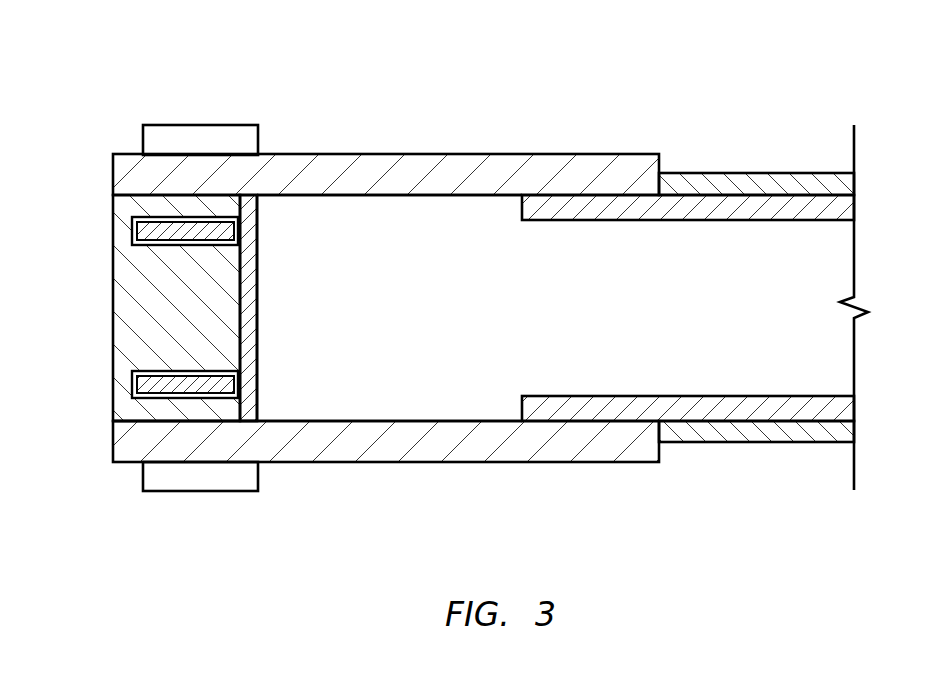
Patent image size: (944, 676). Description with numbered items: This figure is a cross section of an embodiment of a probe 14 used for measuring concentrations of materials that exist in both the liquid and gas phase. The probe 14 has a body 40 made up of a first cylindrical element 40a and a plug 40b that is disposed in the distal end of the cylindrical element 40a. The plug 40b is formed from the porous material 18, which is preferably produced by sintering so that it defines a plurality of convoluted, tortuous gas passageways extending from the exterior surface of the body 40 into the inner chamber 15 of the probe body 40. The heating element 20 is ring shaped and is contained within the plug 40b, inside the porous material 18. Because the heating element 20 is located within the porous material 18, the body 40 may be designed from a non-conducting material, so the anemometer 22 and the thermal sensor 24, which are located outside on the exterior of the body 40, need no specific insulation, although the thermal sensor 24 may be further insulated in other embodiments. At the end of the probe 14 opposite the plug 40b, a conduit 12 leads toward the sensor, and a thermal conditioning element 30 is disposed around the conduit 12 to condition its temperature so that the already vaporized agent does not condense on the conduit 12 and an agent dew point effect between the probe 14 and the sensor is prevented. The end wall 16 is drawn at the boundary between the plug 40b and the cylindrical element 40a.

The conduit 12 is at (779, 208).
The probe 14 is at (338, 306).
The inner chamber 15 is at (453, 270).
The end wall 16 is at (125, 420).
The porous material 18 is at (113, 252).
The heating element 20 is at (130, 383).
The anemometer 22 is at (200, 492).
The thermal sensor 24 is at (200, 125).
The thermal conditioning element 30 is at (705, 173).
The body 40 is at (338, 352).
The first cylindrical element 40a is at (467, 462).
The plug 40b is at (113, 307).